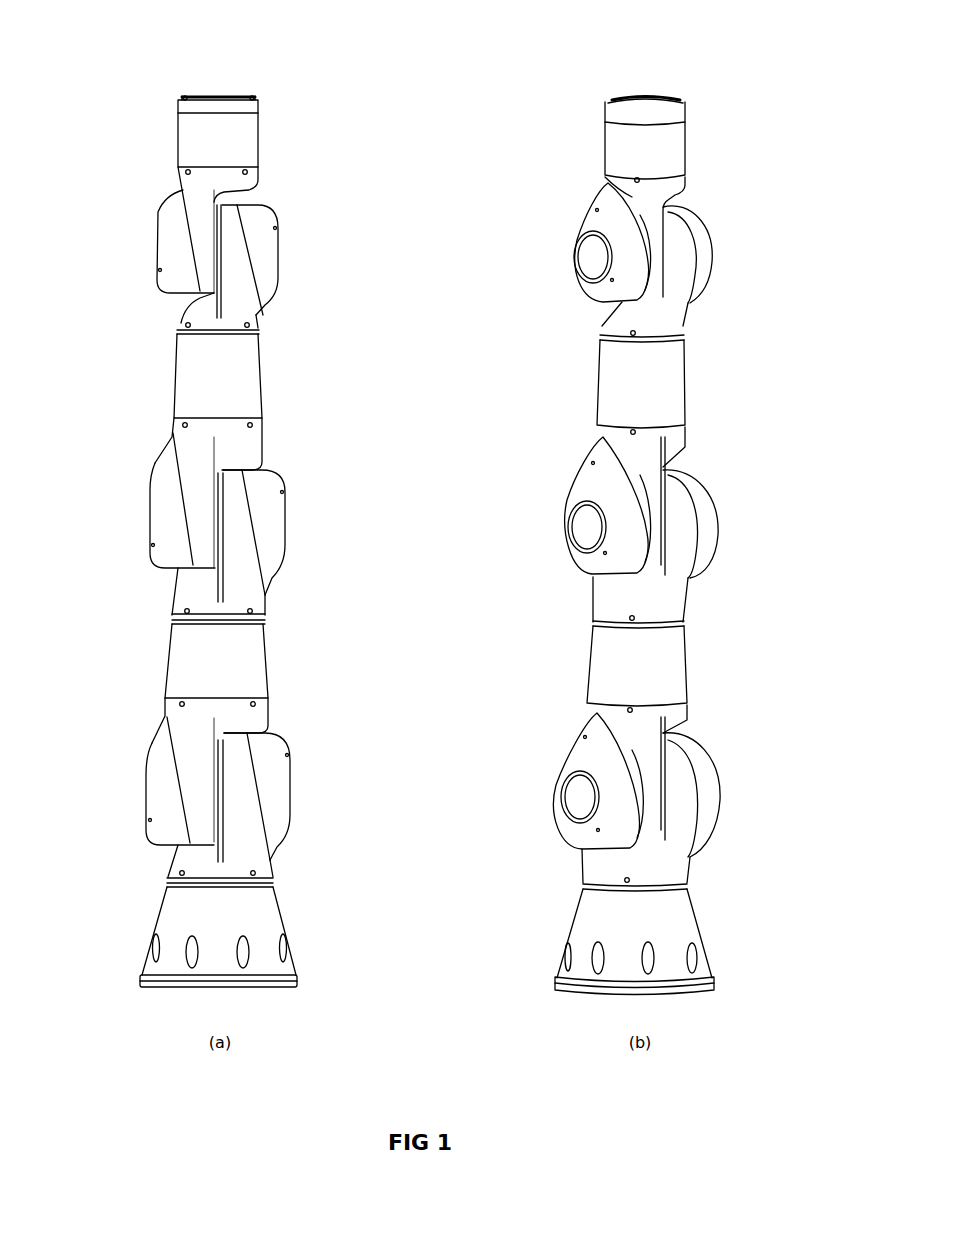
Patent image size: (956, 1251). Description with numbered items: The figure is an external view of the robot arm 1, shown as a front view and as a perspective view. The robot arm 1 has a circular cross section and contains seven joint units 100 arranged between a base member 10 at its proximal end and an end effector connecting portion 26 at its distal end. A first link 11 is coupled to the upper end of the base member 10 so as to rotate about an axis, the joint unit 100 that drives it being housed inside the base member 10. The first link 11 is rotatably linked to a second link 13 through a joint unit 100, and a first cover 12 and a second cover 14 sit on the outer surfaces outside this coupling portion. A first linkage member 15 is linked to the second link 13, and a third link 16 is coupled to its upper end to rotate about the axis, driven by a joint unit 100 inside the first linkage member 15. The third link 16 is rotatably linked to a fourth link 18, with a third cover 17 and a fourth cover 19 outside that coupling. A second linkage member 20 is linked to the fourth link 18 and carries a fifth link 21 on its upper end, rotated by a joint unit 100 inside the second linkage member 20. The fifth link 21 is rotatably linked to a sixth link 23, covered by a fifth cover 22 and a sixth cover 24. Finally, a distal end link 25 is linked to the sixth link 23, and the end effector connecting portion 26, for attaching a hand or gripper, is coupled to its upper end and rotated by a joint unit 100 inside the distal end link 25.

The robot arm 1 is at (147, 70).
The base member 10 is at (170, 920).
The first link 11 is at (258, 857).
The first cover 12 is at (275, 828).
The second link 13 is at (180, 753).
The second cover 14 is at (162, 795).
The first linkage member 15 is at (262, 660).
The third link 16 is at (250, 591).
The third cover 17 is at (275, 556).
The fourth link 18 is at (188, 482).
The fourth cover 19 is at (172, 530).
The second linkage member 20 is at (252, 374).
The fifth link 21 is at (262, 316).
The fifth cover 22 is at (268, 284).
The sixth link 23 is at (196, 196).
The sixth cover 24 is at (165, 268).
The distal end link 25 is at (250, 137).
The end effector connecting portion 26 is at (218, 95).
The joint unit 100 is at (250, 122).